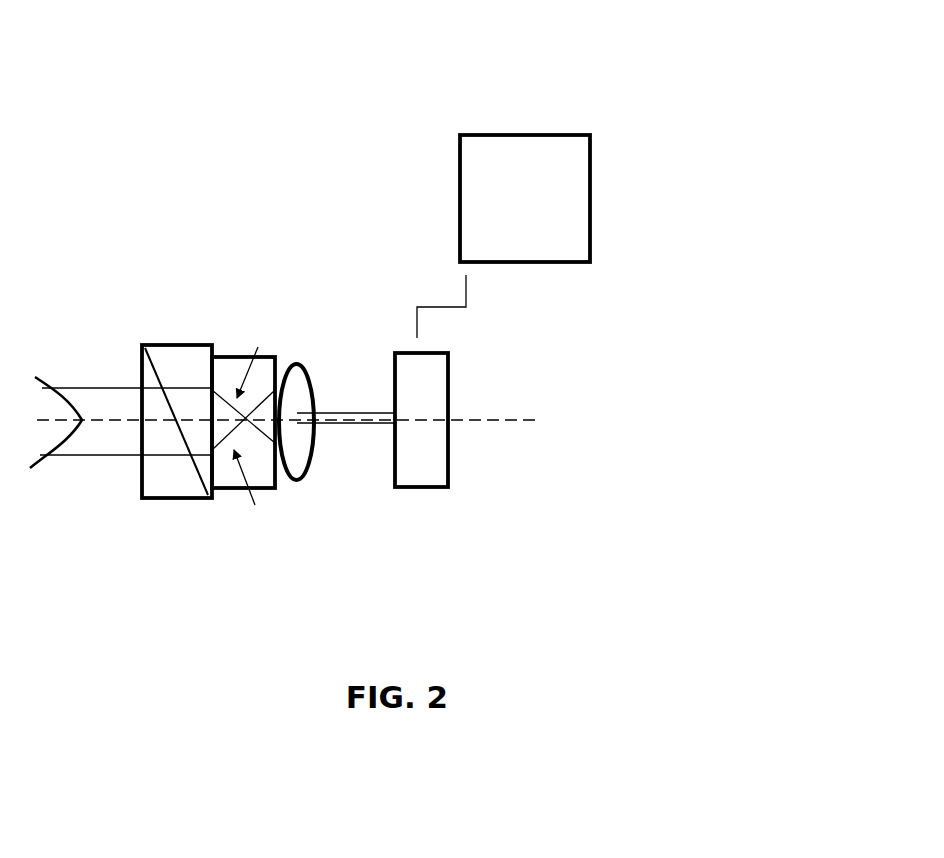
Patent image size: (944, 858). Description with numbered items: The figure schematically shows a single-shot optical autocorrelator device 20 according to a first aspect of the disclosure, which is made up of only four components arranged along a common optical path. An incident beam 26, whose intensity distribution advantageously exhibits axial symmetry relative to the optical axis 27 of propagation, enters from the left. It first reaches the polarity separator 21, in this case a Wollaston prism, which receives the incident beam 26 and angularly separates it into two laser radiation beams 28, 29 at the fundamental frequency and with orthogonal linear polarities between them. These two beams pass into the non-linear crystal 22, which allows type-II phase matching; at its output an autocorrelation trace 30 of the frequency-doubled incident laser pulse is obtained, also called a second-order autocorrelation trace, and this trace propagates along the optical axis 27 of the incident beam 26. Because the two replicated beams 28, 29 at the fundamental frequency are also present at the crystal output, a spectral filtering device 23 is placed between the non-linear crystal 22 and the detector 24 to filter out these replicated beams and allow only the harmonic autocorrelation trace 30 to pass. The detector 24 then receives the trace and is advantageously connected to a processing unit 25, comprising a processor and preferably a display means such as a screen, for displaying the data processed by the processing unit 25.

The single-shot optical autocorrelator device 20 is at (92, 231).
The polarity separator 21 is at (183, 347).
The non-linear crystal 22 is at (233, 495).
The spectral filtering device 23 is at (297, 362).
The detector 24 is at (422, 493).
The processing unit 25 is at (553, 133).
The incident beam 26 is at (85, 385).
The optical axis 27 is at (510, 425).
The laser radiation beam 28 is at (261, 353).
The laser radiation beam 29 is at (255, 496).
The autocorrelation trace 30 is at (353, 427).